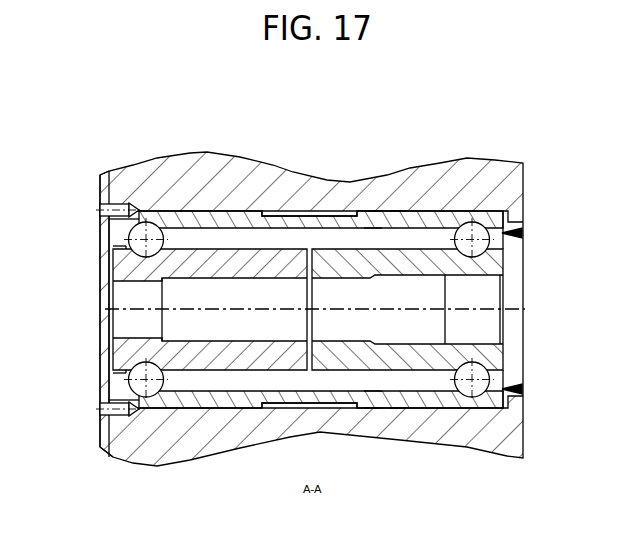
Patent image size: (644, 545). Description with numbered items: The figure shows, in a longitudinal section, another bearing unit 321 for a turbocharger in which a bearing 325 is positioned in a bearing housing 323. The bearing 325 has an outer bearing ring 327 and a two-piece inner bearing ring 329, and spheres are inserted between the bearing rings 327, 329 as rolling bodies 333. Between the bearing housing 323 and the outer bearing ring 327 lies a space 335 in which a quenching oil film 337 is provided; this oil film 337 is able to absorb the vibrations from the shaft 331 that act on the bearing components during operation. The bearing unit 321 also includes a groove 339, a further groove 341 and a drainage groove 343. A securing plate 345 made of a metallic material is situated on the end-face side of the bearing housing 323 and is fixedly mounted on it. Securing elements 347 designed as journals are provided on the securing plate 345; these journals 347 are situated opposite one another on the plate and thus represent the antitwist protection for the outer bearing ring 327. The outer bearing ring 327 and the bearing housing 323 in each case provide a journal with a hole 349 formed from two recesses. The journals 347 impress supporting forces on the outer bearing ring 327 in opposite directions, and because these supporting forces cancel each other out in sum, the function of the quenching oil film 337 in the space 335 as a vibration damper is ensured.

The bearing unit 321 is at (583, 128).
The bearing housing 323 is at (510, 187).
The bearing 325 is at (522, 233).
The outer bearing ring 327 is at (494, 211).
The inner bearing ring 329 is at (128, 265).
The shaft 331 is at (128, 309).
The rolling body 333 is at (128, 239).
The space 335 is at (372, 211).
The oil film 337 is at (375, 503).
The groove 339 is at (222, 210).
The groove 341 is at (398, 212).
The drainage groove 343 is at (294, 214).
The securing plate 345 is at (100, 181).
The securing element 347 is at (100, 210).
The hole 349 is at (132, 181).